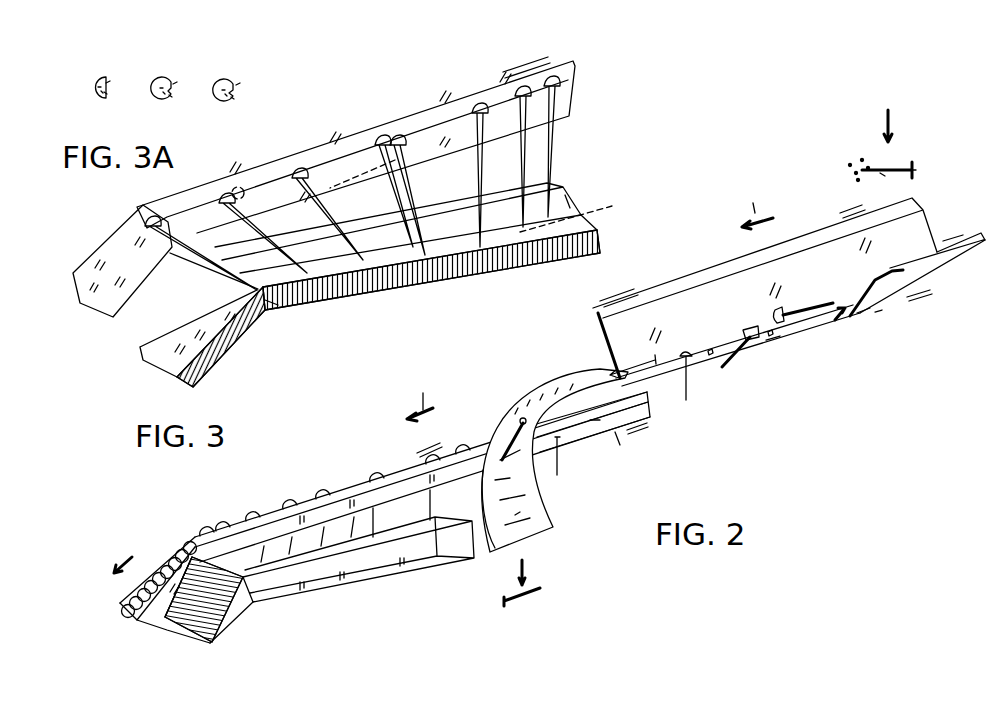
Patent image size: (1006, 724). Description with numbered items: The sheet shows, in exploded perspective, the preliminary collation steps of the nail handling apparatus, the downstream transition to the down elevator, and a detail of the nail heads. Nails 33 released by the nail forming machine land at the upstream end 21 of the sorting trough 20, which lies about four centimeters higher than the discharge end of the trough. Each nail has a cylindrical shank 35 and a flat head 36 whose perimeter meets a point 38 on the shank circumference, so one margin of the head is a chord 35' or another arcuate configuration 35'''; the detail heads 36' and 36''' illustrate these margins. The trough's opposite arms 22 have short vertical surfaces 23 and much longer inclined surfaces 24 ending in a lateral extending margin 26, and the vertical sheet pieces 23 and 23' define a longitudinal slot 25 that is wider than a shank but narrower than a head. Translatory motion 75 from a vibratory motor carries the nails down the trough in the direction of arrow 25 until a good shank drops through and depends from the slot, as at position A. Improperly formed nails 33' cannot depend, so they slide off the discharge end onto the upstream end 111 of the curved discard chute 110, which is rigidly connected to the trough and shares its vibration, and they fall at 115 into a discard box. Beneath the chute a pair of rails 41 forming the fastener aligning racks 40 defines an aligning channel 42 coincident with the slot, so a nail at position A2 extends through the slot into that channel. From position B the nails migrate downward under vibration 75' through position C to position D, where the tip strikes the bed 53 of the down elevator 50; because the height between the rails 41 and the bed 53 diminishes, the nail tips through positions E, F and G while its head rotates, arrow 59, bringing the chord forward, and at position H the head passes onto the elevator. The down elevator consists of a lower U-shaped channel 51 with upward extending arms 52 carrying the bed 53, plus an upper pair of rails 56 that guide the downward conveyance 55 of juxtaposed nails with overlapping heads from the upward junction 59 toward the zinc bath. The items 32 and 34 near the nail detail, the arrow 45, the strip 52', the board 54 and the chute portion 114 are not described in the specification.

In FIG. 2, the sorting trough 20 is at (898, 320).
In FIG. 2, the upstream end 21 is at (926, 216).
In FIG. 2, the opposite arms (discharge end) 22 is at (697, 300).
In FIG. 2, the vertical surfaces 23 is at (772, 356).
In FIG. 2, the vertical sheet piece 23' is at (878, 336).
In FIG. 2, the inclined surfaces 24 is at (740, 323).
In FIG. 2, the longitudinal slot 25 is at (793, 266).
In FIG. 2, the lateral extending margin 26 is at (823, 233).
In FIG. 2, the debris particles 32 is at (855, 160).
In FIG. 2, the nails 33 is at (836, 249).
In FIG. 2, the improperly formed nails 33' is at (596, 468).
In FIG. 2, the direction arrow 34 is at (894, 125).
In FIG. 2, the cylindrical shank 35 is at (865, 185).
In FIG. 3A, the chord 35' is at (127, 108).
In FIG. 3A, the arcuate configuration 35''' is at (258, 112).
In FIG. 2, the flat head 36 is at (940, 170).
In FIG. 3A, the clip 36' is at (95, 68).
In FIG. 3A, the clip 36''' is at (233, 71).
In FIG. 3A, the intersection point 38 is at (107, 85).
In FIG. 2, the fastener aligning racks 40 is at (593, 437).
In FIG. 3, the rails 41 is at (575, 70).
In FIG. 2, the rails 41 is at (650, 410).
In FIG. 2, the aligning channel 42 is at (396, 476).
In FIG. 2, the direction arrow 45 is at (424, 394).
In FIG. 3, the down elevator 50 is at (263, 343).
In FIG. 2, the down elevator 50 is at (233, 630).
In FIG. 3, the lower U-shaped channel 51 is at (596, 202).
In FIG. 3, the upward extending arms 52 is at (417, 212).
In FIG. 2, the upward extending arms 52 is at (358, 548).
In FIG. 2, the nailing strip 52' is at (254, 622).
In FIG. 3, the bed (floorbed) 53 is at (601, 220).
In FIG. 3, the side board 54 is at (193, 333).
In FIG. 2, the downward conveyance 55 is at (109, 552).
In FIG. 3, the upper pair of rails 56 is at (103, 250).
In FIG. 2, the upper pair of rails 56 is at (172, 546).
In FIG. 3, the upward junction (rotation) 59 is at (279, 304).
In FIG. 3, the translatory motion 75 is at (501, 62).
In FIG. 2, the translatory motion 75 is at (774, 275).
In FIG. 2, the vibration of rails 75' is at (554, 430).
In FIG. 2, the curved discard chute 110 is at (556, 383).
In FIG. 2, the upstream end of chute 111 is at (585, 378).
In FIG. 2, the nail in strap 114 is at (537, 530).
In FIG. 2, the discard point 115 is at (530, 575).
In FIG. 2, the position A is at (690, 387).
In FIG. 2, the position A2 is at (613, 440).
In FIG. 2, the position B is at (556, 470).
In FIG. 3, the position C is at (556, 146).
In FIG. 2, the position C is at (373, 537).
In FIG. 3, the position D is at (481, 258).
In FIG. 3, the position E is at (418, 260).
In FIG. 3, the position F is at (364, 285).
In FIG. 3, the position G is at (318, 296).
In FIG. 3, the position H is at (200, 264).
In FIG. 2, the position H is at (185, 553).